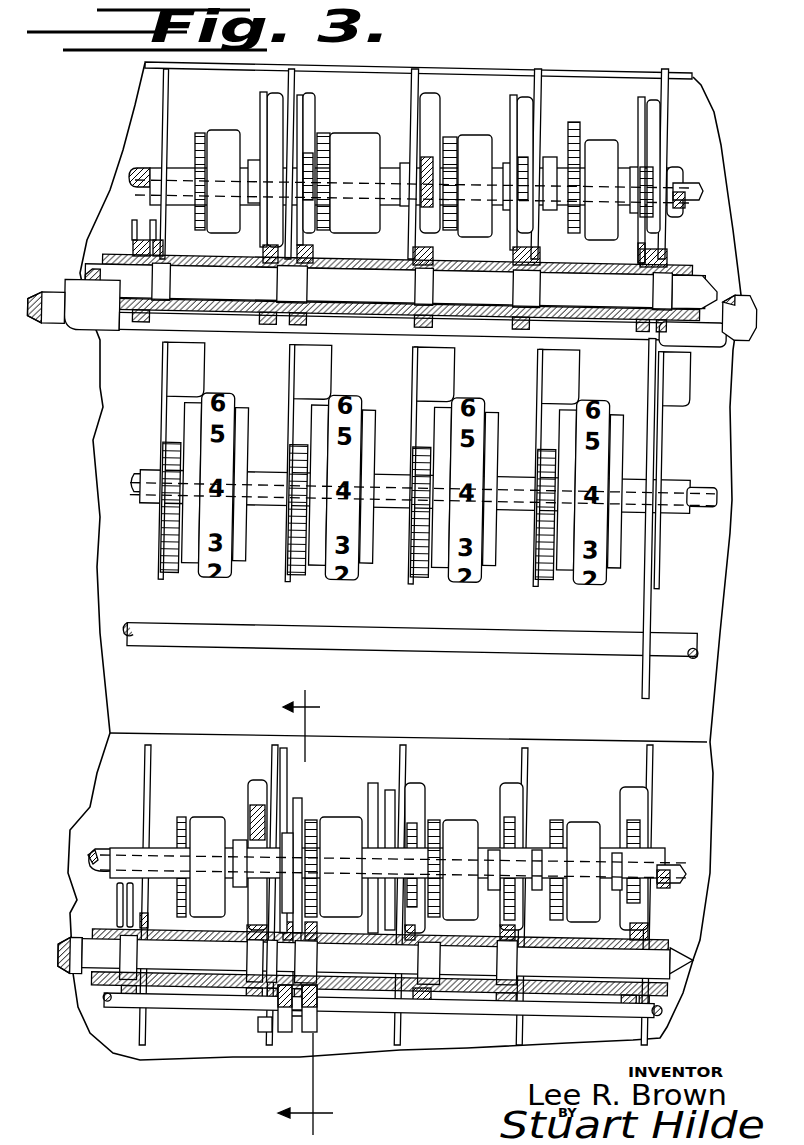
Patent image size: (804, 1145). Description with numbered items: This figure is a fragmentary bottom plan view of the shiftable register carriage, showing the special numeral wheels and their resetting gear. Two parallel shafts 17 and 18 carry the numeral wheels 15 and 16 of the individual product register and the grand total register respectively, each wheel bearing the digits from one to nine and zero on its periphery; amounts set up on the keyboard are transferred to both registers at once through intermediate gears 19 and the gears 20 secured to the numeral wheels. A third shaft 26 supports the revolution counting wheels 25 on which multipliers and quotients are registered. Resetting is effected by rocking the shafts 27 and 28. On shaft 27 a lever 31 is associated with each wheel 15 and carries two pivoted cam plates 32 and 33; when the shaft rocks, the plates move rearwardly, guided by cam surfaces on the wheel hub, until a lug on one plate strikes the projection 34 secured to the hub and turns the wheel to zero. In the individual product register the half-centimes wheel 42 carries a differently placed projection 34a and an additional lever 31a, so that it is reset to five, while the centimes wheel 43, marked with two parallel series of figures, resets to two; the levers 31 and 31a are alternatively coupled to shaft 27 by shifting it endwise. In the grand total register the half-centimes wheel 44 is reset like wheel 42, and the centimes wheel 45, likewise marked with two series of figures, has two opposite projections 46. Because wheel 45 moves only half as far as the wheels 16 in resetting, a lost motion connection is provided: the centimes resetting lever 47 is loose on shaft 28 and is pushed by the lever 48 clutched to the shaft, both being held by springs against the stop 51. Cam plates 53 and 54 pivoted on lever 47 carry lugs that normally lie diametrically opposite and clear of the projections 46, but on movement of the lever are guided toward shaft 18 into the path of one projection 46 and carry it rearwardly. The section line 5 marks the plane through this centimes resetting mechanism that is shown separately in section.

The section line 5- 5 is at (313, 912).
The numeral wheel 15 is at (222, 130).
The numeral wheel 16 is at (208, 816).
The shaft 17 is at (685, 187).
The shaft 18 is at (680, 868).
The intermediate gear 19 is at (575, 122).
The gear 20 is at (197, 133).
The revolution counting wheel 25 is at (479, 574).
The third shaft 26 is at (701, 482).
The shaft 27 is at (703, 289).
The shaft 28 is at (670, 959).
The lever 31 is at (145, 320).
The additional lever 31a is at (300, 322).
The cam plate 32 is at (433, 110).
The cam plate 33 is at (417, 98).
The projection 34 is at (270, 170).
The projection 34a is at (305, 176).
The half centimes wheel 42 is at (487, 137).
The centimes wheel 43 is at (357, 133).
The half centimes wheel 44 is at (463, 822).
The centimes wheel 45 is at (333, 817).
The projection 46 is at (298, 803).
The centimes resetting lever 47 is at (310, 1016).
The lever 48 is at (285, 1032).
The stop 51 is at (303, 1035).
The cam plate 53 is at (302, 817).
The cam plate 54 is at (285, 838).